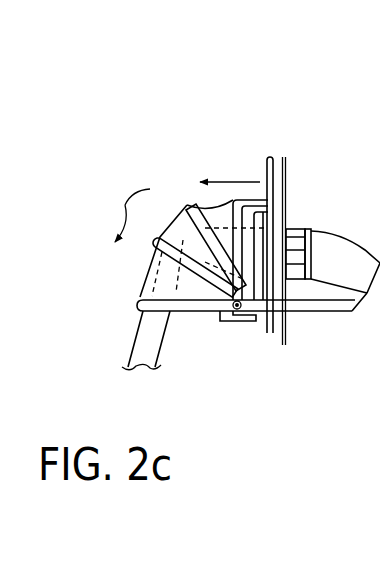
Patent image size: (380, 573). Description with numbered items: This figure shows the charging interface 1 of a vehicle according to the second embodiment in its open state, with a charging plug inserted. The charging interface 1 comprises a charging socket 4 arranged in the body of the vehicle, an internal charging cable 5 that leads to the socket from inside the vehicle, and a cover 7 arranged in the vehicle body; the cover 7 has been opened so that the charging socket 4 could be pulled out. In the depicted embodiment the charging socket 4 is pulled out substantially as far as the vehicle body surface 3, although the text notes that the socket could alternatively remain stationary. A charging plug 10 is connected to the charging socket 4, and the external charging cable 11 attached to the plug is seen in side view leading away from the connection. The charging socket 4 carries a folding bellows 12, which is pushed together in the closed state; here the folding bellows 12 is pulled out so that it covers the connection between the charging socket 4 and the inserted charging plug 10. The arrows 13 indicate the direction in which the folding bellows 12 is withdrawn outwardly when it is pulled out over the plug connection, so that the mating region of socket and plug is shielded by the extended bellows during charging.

The charging interface 1 is at (191, 128).
The vehicle body surface 3 is at (285, 330).
The charging socket 4 is at (290, 228).
The internal charging cable 5 is at (343, 253).
The cover 7 is at (273, 157).
The charging plug 10 is at (223, 247).
The external charging cable 11 is at (138, 345).
The folding bellows 12 is at (187, 205).
The arrows 13 is at (125, 205).